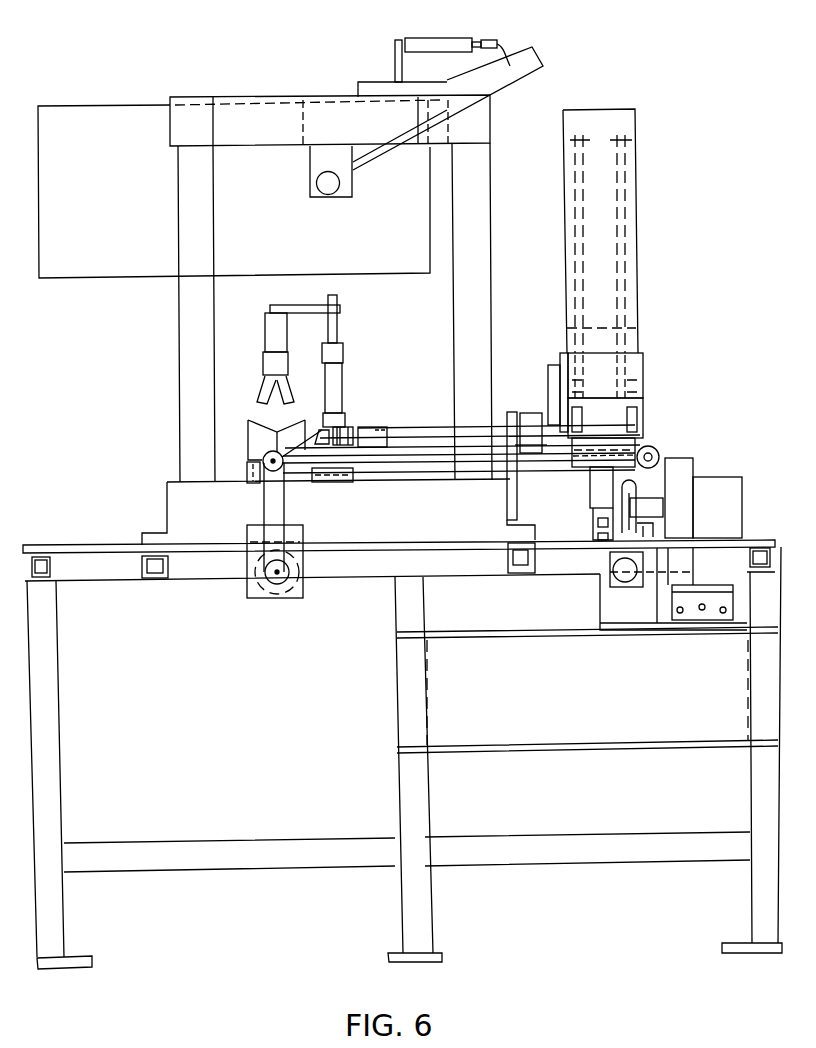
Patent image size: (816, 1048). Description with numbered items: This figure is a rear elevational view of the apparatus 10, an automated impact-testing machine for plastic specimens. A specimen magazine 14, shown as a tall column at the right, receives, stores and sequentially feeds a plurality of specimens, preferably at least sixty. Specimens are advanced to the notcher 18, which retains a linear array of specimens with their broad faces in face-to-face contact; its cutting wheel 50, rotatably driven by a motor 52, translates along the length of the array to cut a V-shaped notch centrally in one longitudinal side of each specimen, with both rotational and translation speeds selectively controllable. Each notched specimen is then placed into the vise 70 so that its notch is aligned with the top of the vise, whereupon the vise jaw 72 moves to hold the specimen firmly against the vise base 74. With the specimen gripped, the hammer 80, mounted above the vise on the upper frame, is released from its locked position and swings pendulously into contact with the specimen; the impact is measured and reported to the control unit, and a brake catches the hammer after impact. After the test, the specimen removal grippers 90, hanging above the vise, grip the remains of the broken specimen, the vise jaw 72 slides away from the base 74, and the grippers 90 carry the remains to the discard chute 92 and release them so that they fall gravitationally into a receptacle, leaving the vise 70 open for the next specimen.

The apparatus 10 is at (230, 77).
The specimen magazine 14 is at (636, 128).
The notcher 18 is at (660, 496).
The cutting wheel 50 is at (627, 484).
The motor 52 is at (744, 503).
The vise 70 is at (350, 421).
The vise jaw 72 is at (358, 448).
The vise base 74 is at (317, 444).
The hammer 80 is at (533, 58).
The specimen removal grippers 90 is at (260, 402).
The discard chute 92 is at (255, 438).